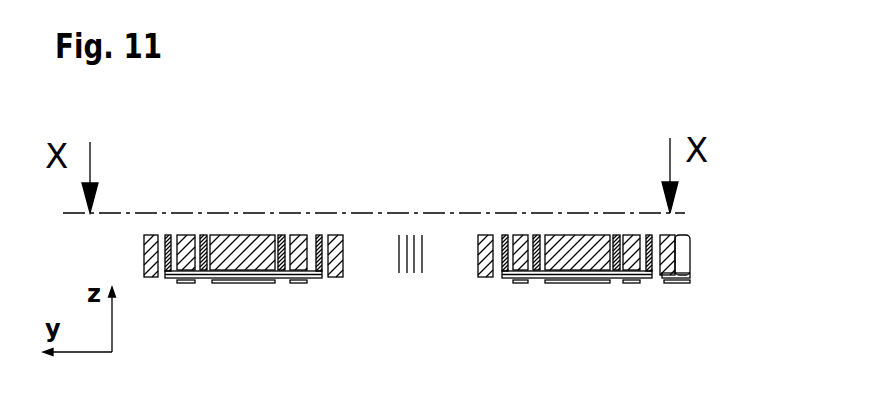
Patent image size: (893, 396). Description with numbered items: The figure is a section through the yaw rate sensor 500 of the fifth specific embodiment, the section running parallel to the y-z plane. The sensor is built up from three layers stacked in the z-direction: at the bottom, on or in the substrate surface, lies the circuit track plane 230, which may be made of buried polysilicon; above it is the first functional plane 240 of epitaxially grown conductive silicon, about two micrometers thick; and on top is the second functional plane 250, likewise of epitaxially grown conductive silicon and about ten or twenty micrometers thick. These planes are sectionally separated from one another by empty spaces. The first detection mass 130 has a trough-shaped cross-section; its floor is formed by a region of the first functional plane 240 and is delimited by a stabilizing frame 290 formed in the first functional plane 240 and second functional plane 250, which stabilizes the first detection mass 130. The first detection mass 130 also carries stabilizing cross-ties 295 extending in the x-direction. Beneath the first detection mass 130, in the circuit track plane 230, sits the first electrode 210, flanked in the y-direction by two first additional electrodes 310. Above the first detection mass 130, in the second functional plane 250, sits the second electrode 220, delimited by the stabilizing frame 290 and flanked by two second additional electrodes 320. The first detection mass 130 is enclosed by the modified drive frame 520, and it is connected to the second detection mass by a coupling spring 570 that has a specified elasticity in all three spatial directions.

The yaw rate sensor 500 is at (517, 132).
The first detection mass 130 is at (205, 279).
The stabilizing frame 290 is at (171, 235).
The stabilizing cross-ties 295 is at (204, 235).
The second electrode 220 is at (253, 235).
The first electrode 210 is at (236, 284).
The second additional electrodes 320 is at (297, 235).
The first additional electrodes 310 is at (297, 284).
The drive frame 520 is at (334, 235).
The coupling spring 570 is at (422, 265).
The second functional plane 250 is at (690, 250).
The first functional plane 240 is at (690, 276).
The circuit track plane 230 is at (690, 282).